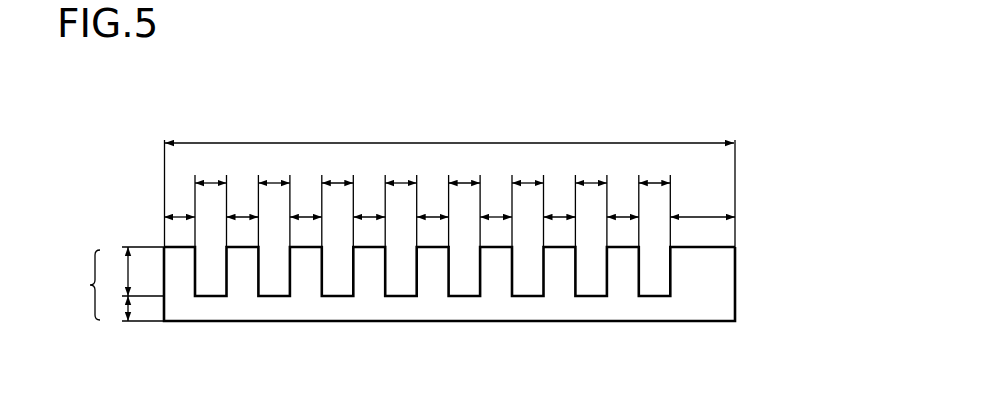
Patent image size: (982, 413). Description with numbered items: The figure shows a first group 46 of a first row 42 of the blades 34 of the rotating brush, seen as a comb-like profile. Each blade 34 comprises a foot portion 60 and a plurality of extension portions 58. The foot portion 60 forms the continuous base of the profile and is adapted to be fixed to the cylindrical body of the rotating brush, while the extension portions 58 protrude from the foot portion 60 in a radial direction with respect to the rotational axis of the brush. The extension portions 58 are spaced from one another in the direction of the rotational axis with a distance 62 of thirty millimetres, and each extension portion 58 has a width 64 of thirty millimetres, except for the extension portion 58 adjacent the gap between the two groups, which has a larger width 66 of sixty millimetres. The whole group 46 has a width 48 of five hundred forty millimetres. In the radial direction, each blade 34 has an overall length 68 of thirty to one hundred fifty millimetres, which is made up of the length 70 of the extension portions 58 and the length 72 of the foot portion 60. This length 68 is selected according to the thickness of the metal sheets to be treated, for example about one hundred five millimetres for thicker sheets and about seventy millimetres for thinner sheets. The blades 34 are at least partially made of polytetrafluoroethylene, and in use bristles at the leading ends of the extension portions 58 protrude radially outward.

The blade 34 is at (515, 317).
The row 42 is at (515, 317).
The group 46 is at (515, 317).
The width 48 is at (450, 180).
The extension portion 58 is at (177, 287).
The foot portion 60 is at (716, 310).
The distance 62 is at (432, 202).
The width 64 is at (401, 203).
The width 66 is at (702, 203).
The length 68 is at (83, 285).
The length 70 is at (134, 271).
The length 72 is at (134, 307).